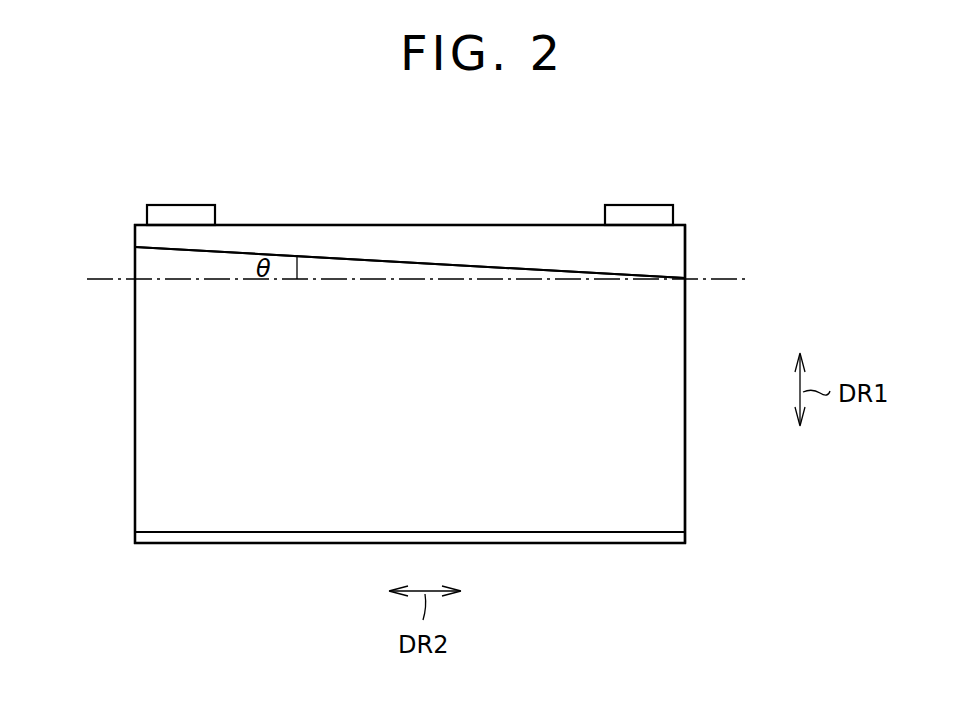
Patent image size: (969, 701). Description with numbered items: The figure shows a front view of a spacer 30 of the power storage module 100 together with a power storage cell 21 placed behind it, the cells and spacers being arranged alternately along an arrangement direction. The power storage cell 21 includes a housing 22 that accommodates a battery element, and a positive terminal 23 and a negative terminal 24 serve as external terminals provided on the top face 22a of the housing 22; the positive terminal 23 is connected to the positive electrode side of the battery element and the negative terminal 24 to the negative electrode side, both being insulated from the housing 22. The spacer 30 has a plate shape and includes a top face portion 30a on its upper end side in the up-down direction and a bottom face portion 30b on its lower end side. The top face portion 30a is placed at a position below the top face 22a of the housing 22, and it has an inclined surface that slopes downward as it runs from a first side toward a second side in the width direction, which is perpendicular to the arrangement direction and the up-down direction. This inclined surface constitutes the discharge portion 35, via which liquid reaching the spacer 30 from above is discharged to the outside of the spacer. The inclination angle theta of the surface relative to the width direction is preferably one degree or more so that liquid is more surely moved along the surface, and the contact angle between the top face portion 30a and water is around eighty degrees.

The power storage module 100 is at (701, 204).
The power storage cell 21 is at (292, 212).
The housing 22 is at (688, 252).
The top face 22a is at (515, 224).
The positive terminal 23 is at (637, 205).
The negative terminal 24 is at (181, 205).
The spacer 30 is at (665, 392).
The top face portion 30a is at (422, 262).
The bottom face portion 30b is at (577, 532).
The discharge portion 35 is at (410, 202).